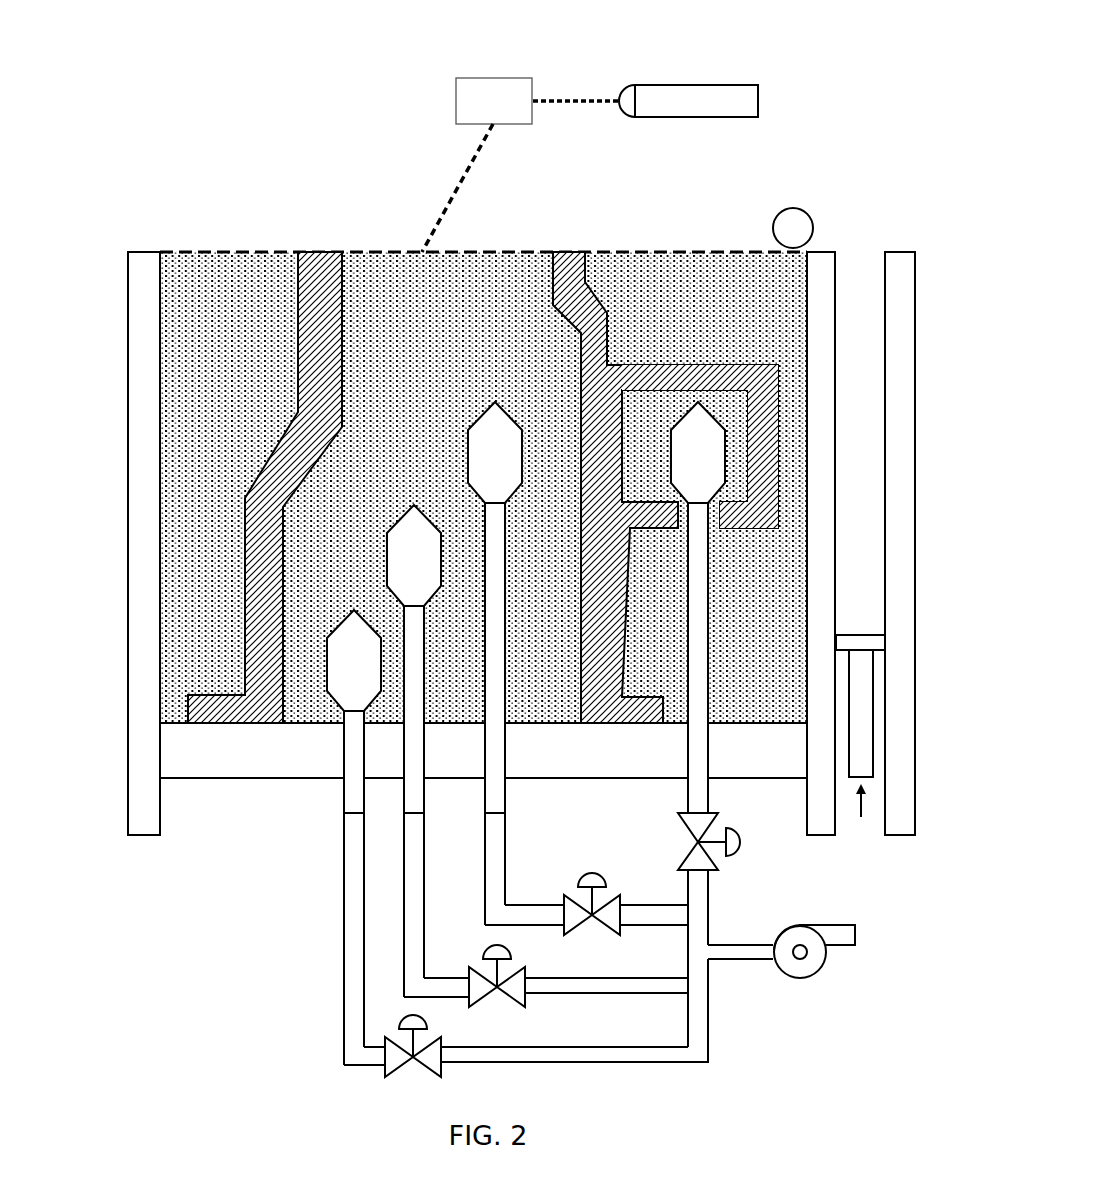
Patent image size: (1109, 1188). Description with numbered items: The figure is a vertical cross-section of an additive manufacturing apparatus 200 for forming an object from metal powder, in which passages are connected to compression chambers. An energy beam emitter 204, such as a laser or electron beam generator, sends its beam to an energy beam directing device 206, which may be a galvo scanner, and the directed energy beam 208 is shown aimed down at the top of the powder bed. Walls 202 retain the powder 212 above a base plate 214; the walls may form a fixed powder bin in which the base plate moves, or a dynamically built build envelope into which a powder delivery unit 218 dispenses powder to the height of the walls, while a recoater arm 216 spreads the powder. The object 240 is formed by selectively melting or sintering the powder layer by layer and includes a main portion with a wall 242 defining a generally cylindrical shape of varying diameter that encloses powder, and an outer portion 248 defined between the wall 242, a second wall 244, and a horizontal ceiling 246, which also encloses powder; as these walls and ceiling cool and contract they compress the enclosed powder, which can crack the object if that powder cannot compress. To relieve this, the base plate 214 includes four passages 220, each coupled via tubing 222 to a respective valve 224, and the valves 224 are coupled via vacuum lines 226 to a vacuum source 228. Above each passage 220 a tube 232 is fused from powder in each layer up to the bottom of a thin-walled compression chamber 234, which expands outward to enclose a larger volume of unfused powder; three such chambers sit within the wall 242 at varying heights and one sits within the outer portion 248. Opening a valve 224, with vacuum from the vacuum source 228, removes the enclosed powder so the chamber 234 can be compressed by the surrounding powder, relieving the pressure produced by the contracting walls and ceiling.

The apparatus 200 is at (158, 55).
The walls 202 is at (135, 272).
The energy beam emitter 204 is at (655, 85).
The energy beam directing device 206 is at (492, 78).
The laser beam 208 is at (456, 188).
The powder 212 is at (703, 290).
The base plate 214 is at (195, 780).
The recoater arm 216 is at (780, 208).
The powder delivery unit 218 is at (858, 641).
The passages 220 is at (355, 758).
The tubing 222 is at (345, 935).
The valves 224 is at (687, 860).
The vacuum lines 226 is at (648, 1066).
The vacuum source 228 is at (805, 978).
The tube 232 is at (350, 715).
The compression chambers 234 is at (345, 616).
The object 240 is at (571, 242).
The wall 242 is at (593, 420).
The wall 244 is at (770, 440).
The horizontal ceiling 246 is at (703, 365).
The outer portion 248 is at (717, 354).